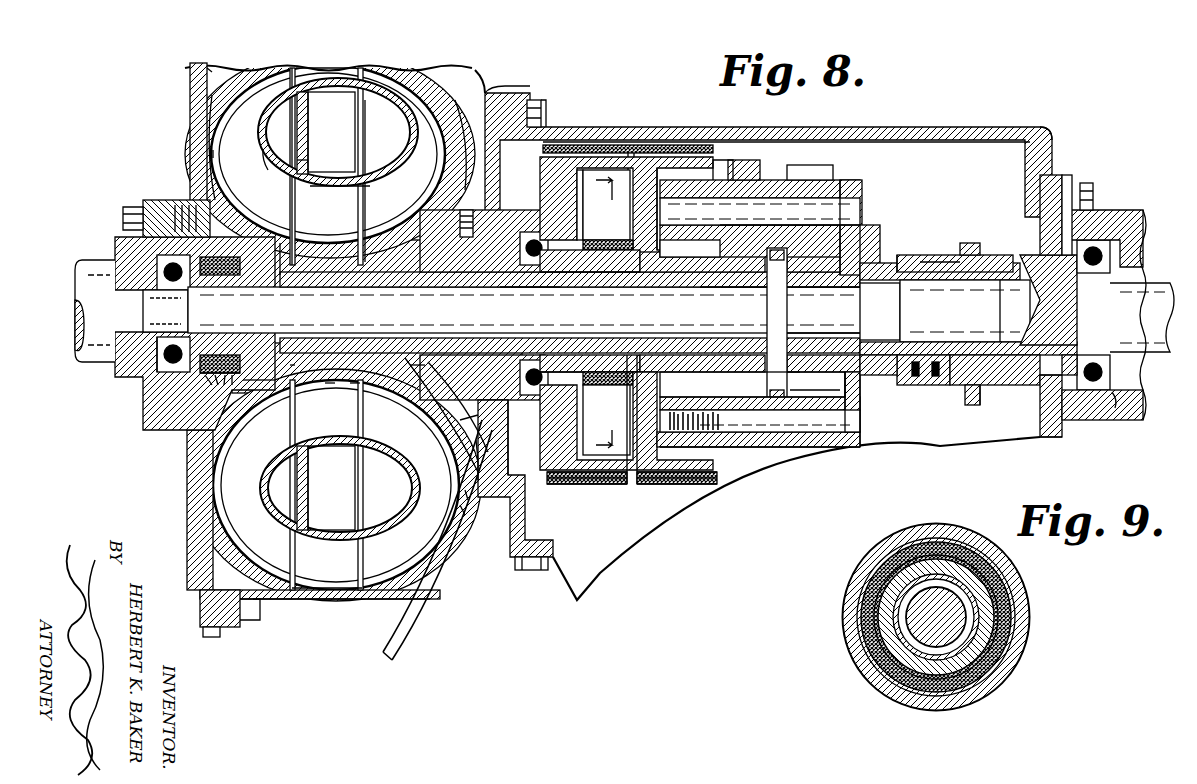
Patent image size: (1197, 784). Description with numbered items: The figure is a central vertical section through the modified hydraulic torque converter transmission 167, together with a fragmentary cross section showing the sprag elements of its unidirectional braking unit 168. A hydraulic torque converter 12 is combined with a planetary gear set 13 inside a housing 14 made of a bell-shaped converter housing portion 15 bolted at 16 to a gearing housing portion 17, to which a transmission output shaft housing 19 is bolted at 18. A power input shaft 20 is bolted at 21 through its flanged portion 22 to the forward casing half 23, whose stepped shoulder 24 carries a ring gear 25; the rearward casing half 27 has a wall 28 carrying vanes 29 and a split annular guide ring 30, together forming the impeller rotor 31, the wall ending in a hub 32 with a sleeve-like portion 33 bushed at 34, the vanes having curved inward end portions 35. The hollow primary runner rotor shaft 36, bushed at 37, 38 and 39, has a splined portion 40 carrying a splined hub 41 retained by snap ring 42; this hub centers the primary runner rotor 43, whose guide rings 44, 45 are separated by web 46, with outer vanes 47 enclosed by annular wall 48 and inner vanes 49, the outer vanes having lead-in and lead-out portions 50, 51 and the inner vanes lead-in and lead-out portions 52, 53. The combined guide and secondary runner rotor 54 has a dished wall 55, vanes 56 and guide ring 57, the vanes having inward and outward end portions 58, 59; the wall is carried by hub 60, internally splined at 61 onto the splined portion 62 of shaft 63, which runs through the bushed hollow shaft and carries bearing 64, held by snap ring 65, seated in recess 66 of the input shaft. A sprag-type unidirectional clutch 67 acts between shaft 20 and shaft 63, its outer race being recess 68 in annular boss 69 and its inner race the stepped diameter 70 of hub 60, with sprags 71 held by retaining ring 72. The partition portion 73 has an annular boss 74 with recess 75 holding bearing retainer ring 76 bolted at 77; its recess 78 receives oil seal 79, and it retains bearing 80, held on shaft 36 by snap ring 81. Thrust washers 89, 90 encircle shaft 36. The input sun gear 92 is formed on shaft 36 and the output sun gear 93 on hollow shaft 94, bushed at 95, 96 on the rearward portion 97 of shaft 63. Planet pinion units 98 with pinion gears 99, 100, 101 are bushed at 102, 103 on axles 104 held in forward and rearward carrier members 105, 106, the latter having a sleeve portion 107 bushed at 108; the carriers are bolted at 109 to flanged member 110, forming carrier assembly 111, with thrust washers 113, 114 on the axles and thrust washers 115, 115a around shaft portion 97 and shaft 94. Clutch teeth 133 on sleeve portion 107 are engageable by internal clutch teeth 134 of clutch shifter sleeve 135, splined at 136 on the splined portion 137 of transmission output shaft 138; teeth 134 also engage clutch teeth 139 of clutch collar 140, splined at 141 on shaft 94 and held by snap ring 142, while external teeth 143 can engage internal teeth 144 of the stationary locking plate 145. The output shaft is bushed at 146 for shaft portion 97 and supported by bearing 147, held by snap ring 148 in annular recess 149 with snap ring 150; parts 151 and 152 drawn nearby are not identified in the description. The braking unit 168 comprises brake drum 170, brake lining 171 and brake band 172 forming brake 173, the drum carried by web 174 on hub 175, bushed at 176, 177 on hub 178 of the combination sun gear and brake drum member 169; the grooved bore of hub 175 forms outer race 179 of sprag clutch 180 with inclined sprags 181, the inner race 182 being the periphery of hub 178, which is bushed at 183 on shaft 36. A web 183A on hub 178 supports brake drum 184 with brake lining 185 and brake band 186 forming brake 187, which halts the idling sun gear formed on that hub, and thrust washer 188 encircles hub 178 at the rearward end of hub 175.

In FIG. 8, the hydraulic torque converter 12 is at (458, 78).
In FIG. 8, the planetary gear set 13 is at (722, 150).
In FIG. 8, the housing 14 is at (515, 93).
In FIG. 8, the hydraulic torque converter housing portion 15 is at (490, 90).
In FIG. 8, the bolt 16 is at (533, 100).
In FIG. 8, the gearing housing portion 17 is at (541, 120).
In FIG. 8, the bolt 18 is at (1086, 183).
In FIG. 8, the transmission output shaft housing 19 is at (1100, 210).
In FIG. 8, the power input shaft 20 is at (100, 298).
In FIG. 8, the bolt 21 is at (123, 215).
In FIG. 8, the flanged portion 22 is at (170, 205).
In FIG. 8, the hydraulic torque converter forward casing half 23 is at (190, 125).
In FIG. 8, the stepped shoulder 24 is at (200, 590).
In FIG. 8, the ring gear 25 is at (210, 640).
In FIG. 8, the hydraulic torque converter rearward casing half 27 is at (285, 600).
In FIG. 8, the wall 28 is at (438, 556).
In FIG. 8, the vanes 29 is at (446, 153).
In FIG. 8, the split annular guide ring 30 is at (410, 128).
In FIG. 8, the impeller rotor 31 is at (415, 72).
In FIG. 8, the hub 32 is at (418, 370).
In FIG. 8, the sleeve-like portion 33 is at (450, 415).
In FIG. 8, the bushing 34 is at (432, 398).
In FIG. 8, the inward end portions 35 is at (390, 218).
In FIG. 8, the hollow primary runner rotor shaft 36 is at (470, 425).
In FIG. 9, the hollow primary runner rotor shaft 36 is at (972, 657).
In FIG. 8, the bushing 37 is at (368, 288).
In FIG. 8, the bushing 38 is at (540, 288).
In FIG. 8, the bushing 39 is at (733, 288).
In FIG. 8, the exteriorly splined portion 40 is at (330, 385).
In FIG. 8, the splined hub 41 is at (352, 385).
In FIG. 8, the snap ring 42 is at (292, 370).
In FIG. 8, the primary runner rotor 43 is at (300, 68).
In FIG. 8, the split annular guide ring 44 is at (308, 100).
In FIG. 8, the split annular guide ring 45 is at (308, 160).
In FIG. 8, the web 46 is at (308, 128).
In FIG. 8, the outer series of vanes 47 is at (336, 576).
In FIG. 8, the annular wall 48 is at (308, 592).
In FIG. 8, the inward series of vanes 49 is at (336, 208).
In FIG. 8, the lead-in portion 50 is at (352, 561).
In FIG. 8, the lead-out portion 51 is at (310, 559).
In FIG. 8, the lead-in portion 52 is at (318, 228).
In FIG. 8, the lead-out portion 53 is at (356, 238).
In FIG. 8, the combined guide and secondary runner rotor 54 is at (205, 72).
In FIG. 8, the dished-like wall 55 is at (212, 130).
In FIG. 8, the vanes 56 is at (244, 166).
In FIG. 8, the split annular guide ring 57 is at (268, 160).
In FIG. 8, the inward end portion 58 is at (286, 216).
In FIG. 8, the outward end portion 59 is at (286, 94).
In FIG. 8, the hub 60 is at (250, 385).
In FIG. 8, the internal splines 61 is at (235, 385).
In FIG. 8, the splined portion 62 is at (262, 315).
In FIG. 8, the shaft 63 is at (448, 305).
In FIG. 9, the shaft 63 is at (964, 670).
In FIG. 8, the anti-friction bearing 64 is at (175, 352).
In FIG. 8, the snap ring 65 is at (162, 347).
In FIG. 8, the recess 66 is at (195, 365).
In FIG. 8, the unidirectional clutch 67 is at (210, 380).
In FIG. 8, the recess 68 is at (232, 385).
In FIG. 8, the annular boss 69 is at (215, 420).
In FIG. 8, the stepped diameter 70 is at (218, 385).
In FIG. 8, the sprags 71 is at (224, 385).
In FIG. 8, the retaining ring 72 is at (212, 385).
In FIG. 8, the partition portion 73 is at (478, 500).
In FIG. 8, the annular boss 74 is at (522, 565).
In FIG. 8, the recess 75 is at (463, 512).
In FIG. 8, the bearing retainer ring 76 is at (466, 497).
In FIG. 8, the bolt 77 is at (466, 236).
In FIG. 8, the recess 78 is at (478, 470).
In FIG. 8, the oil seal 79 is at (478, 450).
In FIG. 8, the anti-friction bearing 80 is at (516, 400).
In FIG. 8, the snap ring 81 is at (545, 400).
In FIG. 8, the thrust washer 89 is at (540, 398).
In FIG. 8, the thrust washer 90 is at (748, 447).
In FIG. 8, the input sun gear 92 is at (764, 335).
In FIG. 8, the output sun gear 93 is at (790, 372).
In FIG. 8, the hollow shaft 94 is at (830, 272).
In FIG. 8, the bushing 95 is at (810, 342).
In FIG. 8, the bushing 96 is at (912, 342).
In FIG. 8, the rearward portion 97 is at (982, 303).
In FIG. 8, the planet pinion units 98 is at (775, 172).
In FIG. 8, the pinion gear 99 is at (735, 162).
In FIG. 8, the pinion gear 100 is at (782, 135).
In FIG. 8, the pinion gear 101 is at (840, 165).
In FIG. 8, the bushing 102 is at (668, 212).
In FIG. 8, the bushing 103 is at (790, 225).
In FIG. 8, the planet pinion axles 104 is at (772, 211).
In FIG. 8, the forward planet pinion carrier member 105 is at (835, 447).
In FIG. 8, the rearward planet pinion carrier member 106 is at (825, 447).
In FIG. 8, the sleeve portion 107 is at (866, 255).
In FIG. 8, the bushing 108 is at (866, 280).
In FIG. 8, the bolt 109 is at (860, 410).
In FIG. 8, the flanged member 110 is at (770, 447).
In FIG. 8, the planet pinion carrier assembly 111 is at (777, 447).
In FIG. 8, the thrust washer 113 is at (680, 180).
In FIG. 8, the thrust washer 114 is at (850, 180).
In FIG. 8, the thrust washer 115 is at (800, 400).
In FIG. 8, the thrust washer 115a is at (865, 400).
In FIG. 8, the clutch teeth 133 is at (900, 255).
In FIG. 8, the internally formed clutch teeth 134 is at (915, 255).
In FIG. 8, the clutch shifter sleeve 135 is at (985, 405).
In FIG. 8, the internal splines 136 is at (1025, 385).
In FIG. 8, the splined portion 137 is at (1040, 378).
In FIG. 8, the transmission output shaft 138 is at (1160, 303).
In FIG. 8, the clutch teeth 139 is at (935, 262).
In FIG. 8, the clutch collar 140 is at (915, 380).
In FIG. 8, the internal splines 141 is at (968, 250).
In FIG. 8, the snap ring 142 is at (936, 380).
In FIG. 8, the externally formed clutch teeth 143 is at (1050, 240).
In FIG. 8, the internally formed clutch teeth 144 is at (1045, 215).
In FIG. 8, the locking plate 145 is at (1046, 127).
In FIG. 8, the bushing 146 is at (990, 342).
In FIG. 8, the anti-friction bearing 147 is at (1100, 372).
In FIG. 8, the snap ring 148 is at (1108, 255).
In FIG. 8, the annular recess 149 is at (1118, 400).
In FIG. 8, the snap ring 150 is at (1095, 240).
In FIG. 8, the passage 151 is at (985, 405).
In FIG. 8, the plug 152 is at (972, 405).
In FIG. 8, the modified hydraulic torque converter transmission 167 is at (478, 630).
In FIG. 8, the unidirectional braking unit 168 is at (568, 434).
In FIG. 8, the combination sun gear and brake drum member 169 is at (637, 490).
In FIG. 8, the brake drum 170 is at (594, 484).
In FIG. 8, the brake lining 171 is at (590, 484).
In FIG. 8, the brake band 172 is at (585, 484).
In FIG. 8, the brake 173 is at (583, 492).
In FIG. 8, the web 174 is at (548, 168).
In FIG. 8, the hub 175 is at (580, 240).
In FIG. 9, the hub 175 is at (1022, 574).
In FIG. 8, the bushing 176 is at (572, 355).
In FIG. 8, the bushing 177 is at (620, 372).
In FIG. 8, the hub 178 is at (672, 272).
In FIG. 9, the hub 178 is at (987, 624).
In FIG. 8, the outer race 179 is at (592, 240).
In FIG. 9, the outer race 179 is at (994, 680).
In FIG. 8, the unidirectional clutch 180 is at (533, 238).
In FIG. 8, the sprags 181 is at (610, 251).
In FIG. 9, the sprags 181 is at (1007, 602).
In FIG. 8, the inner race 182 is at (606, 386).
In FIG. 9, the inner race 182 is at (1007, 700).
In FIG. 8, the bushing 183 is at (608, 272).
In FIG. 9, the bushing 183 is at (977, 642).
In FIG. 8, the web 183A is at (632, 150).
In FIG. 8, the brake drum 184 is at (718, 475).
In FIG. 8, the brake lining 185 is at (712, 480).
In FIG. 8, the brake band 186 is at (708, 484).
In FIG. 8, the brake 187 is at (679, 492).
In FIG. 8, the thrust washer 188 is at (628, 150).